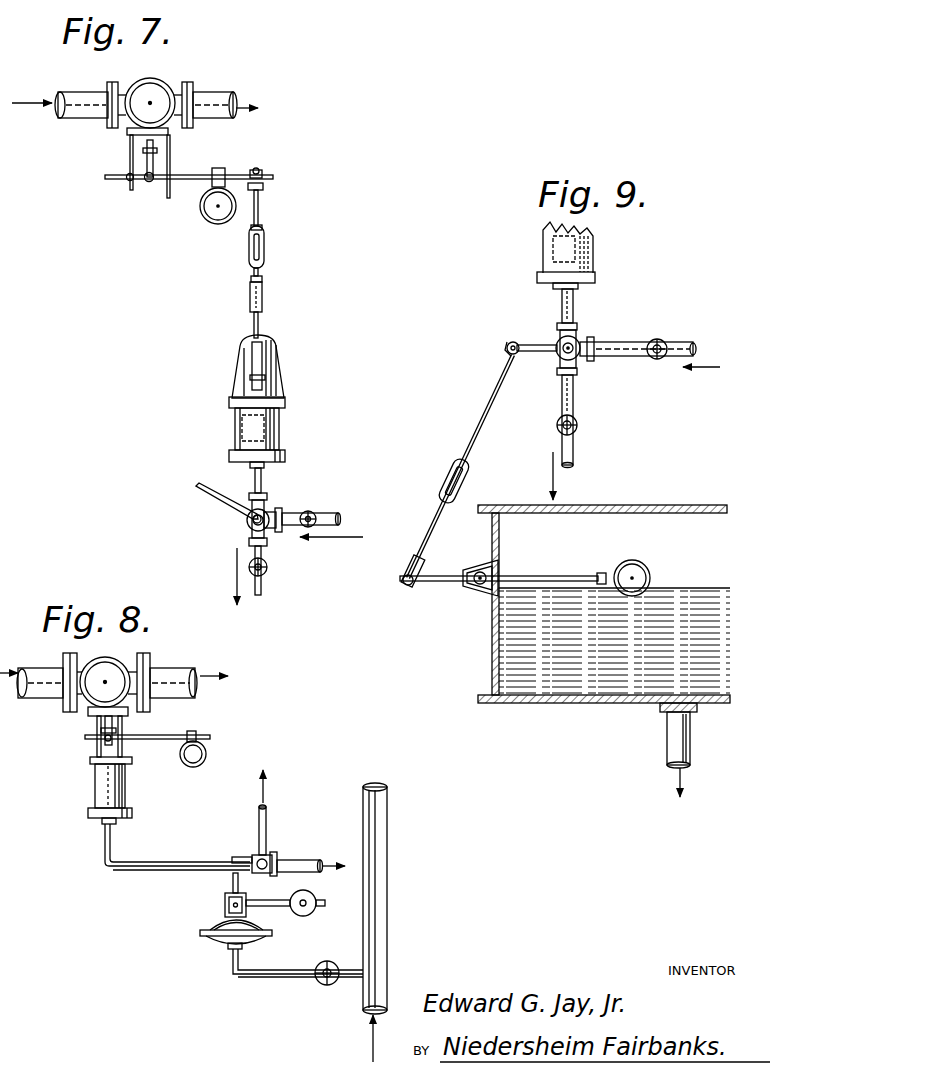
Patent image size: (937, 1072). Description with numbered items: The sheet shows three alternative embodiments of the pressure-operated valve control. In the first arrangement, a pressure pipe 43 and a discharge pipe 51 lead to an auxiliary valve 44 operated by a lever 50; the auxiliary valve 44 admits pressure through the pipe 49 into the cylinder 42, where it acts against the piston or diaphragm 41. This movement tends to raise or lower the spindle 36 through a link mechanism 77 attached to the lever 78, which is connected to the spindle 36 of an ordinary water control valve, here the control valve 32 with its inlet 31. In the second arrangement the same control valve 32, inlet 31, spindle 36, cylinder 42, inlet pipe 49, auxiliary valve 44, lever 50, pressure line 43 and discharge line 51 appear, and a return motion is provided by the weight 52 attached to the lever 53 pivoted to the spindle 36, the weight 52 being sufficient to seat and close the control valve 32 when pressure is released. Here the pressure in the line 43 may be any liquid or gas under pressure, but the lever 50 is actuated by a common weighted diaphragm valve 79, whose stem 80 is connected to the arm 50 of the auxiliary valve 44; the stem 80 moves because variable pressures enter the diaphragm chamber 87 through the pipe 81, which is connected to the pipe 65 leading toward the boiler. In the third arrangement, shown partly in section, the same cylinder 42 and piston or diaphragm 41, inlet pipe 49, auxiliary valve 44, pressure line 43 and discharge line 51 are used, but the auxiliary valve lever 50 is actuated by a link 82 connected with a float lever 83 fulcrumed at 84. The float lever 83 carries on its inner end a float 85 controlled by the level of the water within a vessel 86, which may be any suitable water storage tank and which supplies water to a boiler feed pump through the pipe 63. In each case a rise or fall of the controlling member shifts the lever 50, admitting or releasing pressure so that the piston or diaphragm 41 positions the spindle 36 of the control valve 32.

In FIG. 7, the inlet 31 is at (70, 94).
In FIG. 8, the inlet 31 is at (45, 655).
In FIG. 7, the control valve 32 is at (146, 92).
In FIG. 8, the control valve 32 is at (107, 660).
In FIG. 7, the spindle 36 is at (147, 160).
In FIG. 8, the spindle 36 is at (100, 748).
In FIG. 7, the piston or diaphragm 41 is at (245, 428).
In FIG. 9, the piston or diaphragm 41 is at (558, 240).
In FIG. 7, the cylinder 42 is at (273, 446).
In FIG. 8, the cylinder 42 is at (103, 786).
In FIG. 9, the cylinder 42 is at (553, 258).
In FIG. 7, the pressure line 43 is at (322, 518).
In FIG. 8, the pressure line 43 is at (300, 866).
In FIG. 9, the pressure line 43 is at (634, 357).
In FIG. 7, the auxiliary valve 44 is at (266, 512).
In FIG. 8, the auxiliary valve 44 is at (272, 858).
In FIG. 9, the auxiliary valve 44 is at (583, 343).
In FIG. 7, the inlet pipe 49 is at (255, 480).
In FIG. 8, the inlet pipe 49 is at (150, 858).
In FIG. 9, the inlet pipe 49 is at (562, 302).
In FIG. 7, the lever 50 is at (218, 502).
In FIG. 8, the lever 50 is at (246, 862).
In FIG. 9, the lever 50 is at (525, 333).
In FIG. 7, the discharge line 51 is at (262, 584).
In FIG. 8, the discharge line 51 is at (268, 818).
In FIG. 9, the discharge line 51 is at (575, 423).
In FIG. 8, the weight 52 is at (190, 764).
In FIG. 8, the lever 53 is at (158, 733).
In FIG. 9, the pipe 63 is at (668, 738).
In FIG. 8, the pipe 65 is at (385, 866).
In FIG. 7, the link mechanism 77 is at (265, 243).
In FIG. 7, the lever 78 is at (236, 176).
In FIG. 8, the weighted diaphragm valve 79 is at (225, 925).
In FIG. 8, the stem 80 is at (233, 883).
In FIG. 8, the pipe 81 is at (282, 968).
In FIG. 9, the link 82 is at (497, 388).
In FIG. 9, the float lever 83 is at (442, 582).
In FIG. 9, the fulcrum 84 is at (478, 568).
In FIG. 9, the float 85 is at (634, 568).
In FIG. 9, the vessel 86 is at (640, 496).
In FIG. 8, the diaphragm chamber 87 is at (230, 942).